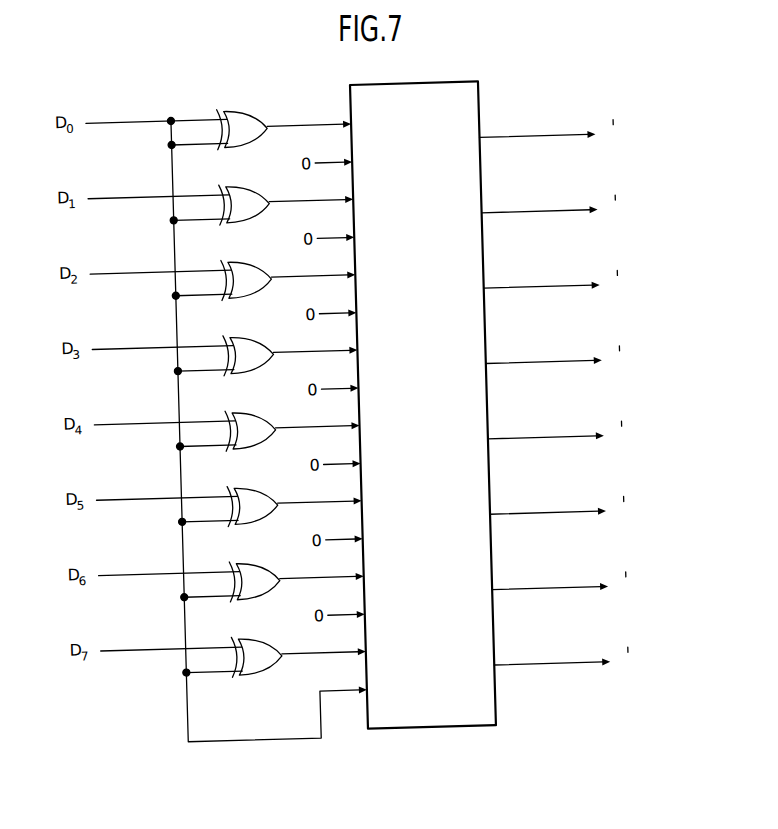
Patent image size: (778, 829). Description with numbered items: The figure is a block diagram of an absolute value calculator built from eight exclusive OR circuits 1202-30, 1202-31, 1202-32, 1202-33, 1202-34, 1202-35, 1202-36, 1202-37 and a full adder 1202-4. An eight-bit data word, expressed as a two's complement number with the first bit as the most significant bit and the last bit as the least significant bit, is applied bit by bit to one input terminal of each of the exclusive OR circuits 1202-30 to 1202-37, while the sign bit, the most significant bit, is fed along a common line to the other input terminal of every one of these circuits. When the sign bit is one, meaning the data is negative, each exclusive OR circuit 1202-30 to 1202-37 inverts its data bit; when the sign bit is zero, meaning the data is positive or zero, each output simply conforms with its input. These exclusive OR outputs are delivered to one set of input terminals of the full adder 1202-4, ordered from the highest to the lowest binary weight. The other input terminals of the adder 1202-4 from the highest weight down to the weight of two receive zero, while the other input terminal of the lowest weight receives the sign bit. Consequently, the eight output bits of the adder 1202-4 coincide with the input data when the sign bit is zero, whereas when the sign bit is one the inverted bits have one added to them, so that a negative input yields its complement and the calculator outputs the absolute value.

The exclusive OR circuit 1202-30 is at (258, 108).
The exclusive OR circuit 1202-31 is at (258, 183).
The exclusive OR circuit 1202-32 is at (258, 259).
The exclusive OR circuit 1202-33 is at (258, 334).
The exclusive OR circuit 1202-34 is at (258, 410).
The exclusive OR circuit 1202-35 is at (258, 485).
The exclusive OR circuit 1202-36 is at (258, 560).
The exclusive OR circuit 1202-37 is at (258, 636).
The full adder 1202-4 is at (428, 84).